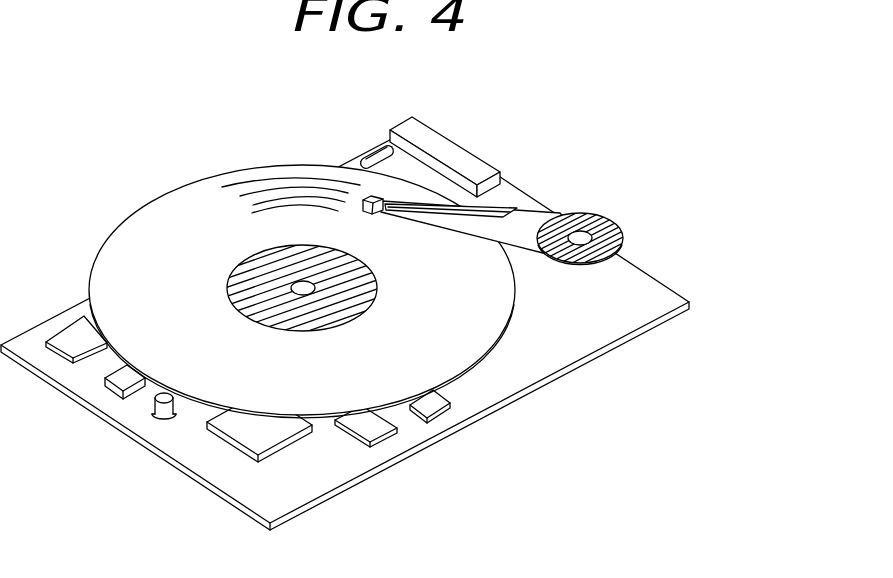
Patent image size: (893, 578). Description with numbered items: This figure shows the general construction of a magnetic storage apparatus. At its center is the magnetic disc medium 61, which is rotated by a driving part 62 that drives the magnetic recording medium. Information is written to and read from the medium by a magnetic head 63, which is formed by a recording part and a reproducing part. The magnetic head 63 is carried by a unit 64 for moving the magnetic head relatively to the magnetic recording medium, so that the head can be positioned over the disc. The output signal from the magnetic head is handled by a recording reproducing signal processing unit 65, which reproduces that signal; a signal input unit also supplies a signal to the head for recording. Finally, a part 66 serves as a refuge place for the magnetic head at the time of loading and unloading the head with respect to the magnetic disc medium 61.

The magnetic disc medium 61 is at (143, 243).
The driving part 62 is at (265, 273).
The magnetic head 63 is at (373, 198).
The unit for moving the magnetic head 64 is at (577, 223).
The recording reproducing signal processing unit 65 is at (273, 433).
The refuge part 66 is at (370, 153).